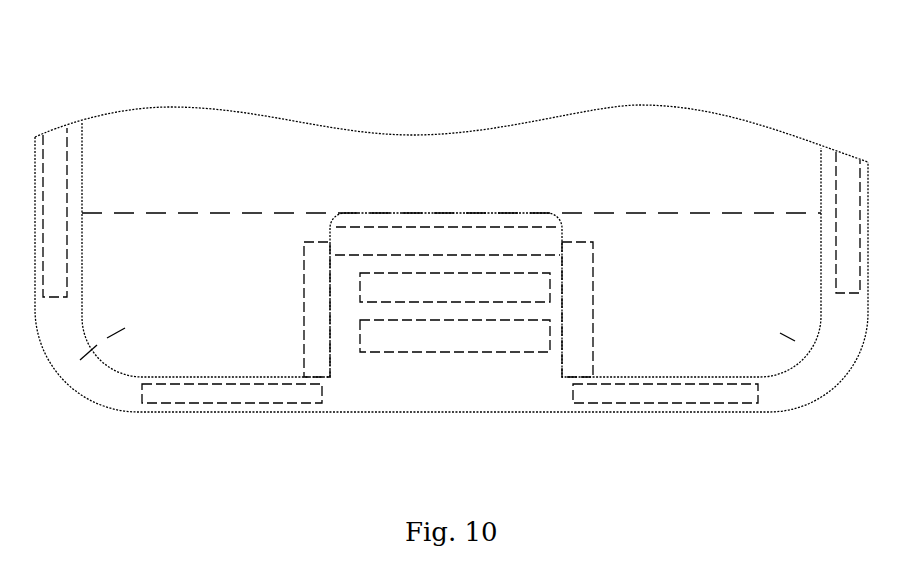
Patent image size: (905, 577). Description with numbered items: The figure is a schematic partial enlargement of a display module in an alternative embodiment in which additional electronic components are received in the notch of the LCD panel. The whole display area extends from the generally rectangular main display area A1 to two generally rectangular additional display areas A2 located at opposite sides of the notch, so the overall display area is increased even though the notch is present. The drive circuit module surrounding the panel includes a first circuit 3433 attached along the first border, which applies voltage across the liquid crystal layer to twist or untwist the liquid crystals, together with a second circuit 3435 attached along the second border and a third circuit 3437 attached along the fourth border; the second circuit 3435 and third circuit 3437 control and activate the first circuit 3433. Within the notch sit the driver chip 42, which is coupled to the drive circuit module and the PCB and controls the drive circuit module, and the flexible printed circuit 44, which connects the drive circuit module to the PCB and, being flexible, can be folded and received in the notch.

The main display area A1 is at (192, 140).
The additional display areas A2 is at (76, 366).
The first circuit 3433 is at (214, 406).
The second circuit 3435 is at (848, 180).
The third circuit 3437 is at (53, 158).
The driver chip 42 is at (487, 287).
The flexible printed circuit 44 is at (412, 332).